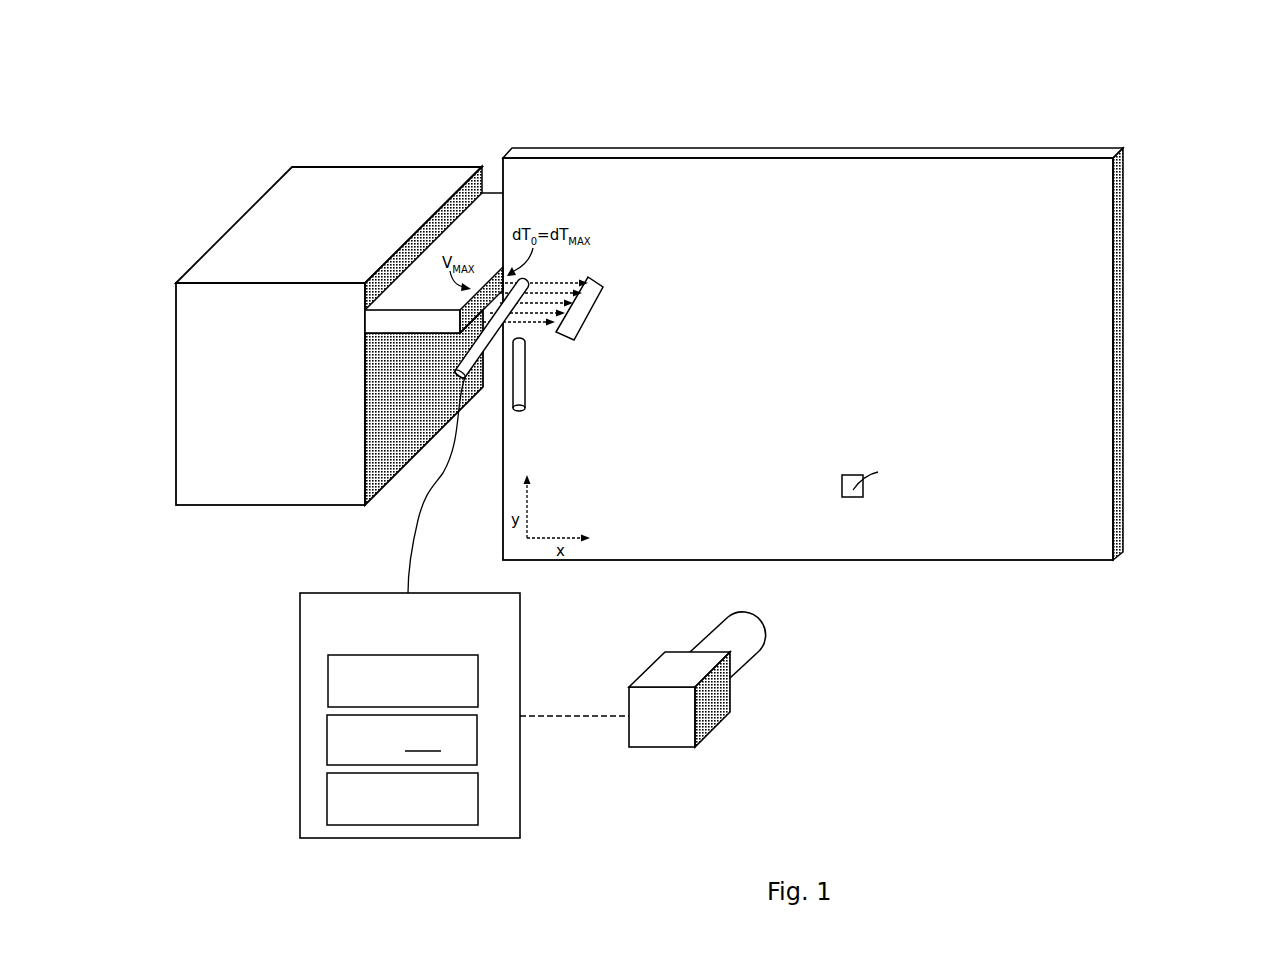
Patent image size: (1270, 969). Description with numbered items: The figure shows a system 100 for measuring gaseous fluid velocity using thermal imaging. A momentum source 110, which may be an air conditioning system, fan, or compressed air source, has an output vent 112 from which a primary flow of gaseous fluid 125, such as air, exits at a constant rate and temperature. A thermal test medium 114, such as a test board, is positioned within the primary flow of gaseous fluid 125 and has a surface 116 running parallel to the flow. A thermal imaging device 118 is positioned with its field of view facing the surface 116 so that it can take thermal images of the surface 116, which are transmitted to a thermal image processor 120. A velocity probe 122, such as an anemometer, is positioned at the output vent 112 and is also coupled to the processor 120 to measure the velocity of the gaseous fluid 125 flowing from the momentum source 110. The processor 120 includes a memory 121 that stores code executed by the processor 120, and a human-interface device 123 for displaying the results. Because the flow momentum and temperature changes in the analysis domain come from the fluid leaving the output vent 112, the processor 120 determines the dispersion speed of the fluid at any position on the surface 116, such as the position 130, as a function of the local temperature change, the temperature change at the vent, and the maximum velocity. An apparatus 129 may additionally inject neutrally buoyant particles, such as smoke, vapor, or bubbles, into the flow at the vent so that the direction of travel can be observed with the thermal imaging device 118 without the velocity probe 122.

The system 100 is at (1200, 174).
The momentum source 110 is at (250, 207).
The output vent 112 is at (402, 285).
The thermal test medium 114 is at (1125, 348).
The surface 116 is at (1093, 191).
The thermal imaging device 118 is at (733, 695).
The thermal image processor 120 is at (439, 715).
The memory 121 is at (456, 691).
The velocity probe 122 is at (484, 375).
The human-interface device 123 is at (435, 811).
The primary flow of gaseous fluid 125 is at (592, 320).
The apparatus for injecting neutrally buoyant particles 129 is at (528, 363).
The position (x,y) on surface 130 is at (852, 497).